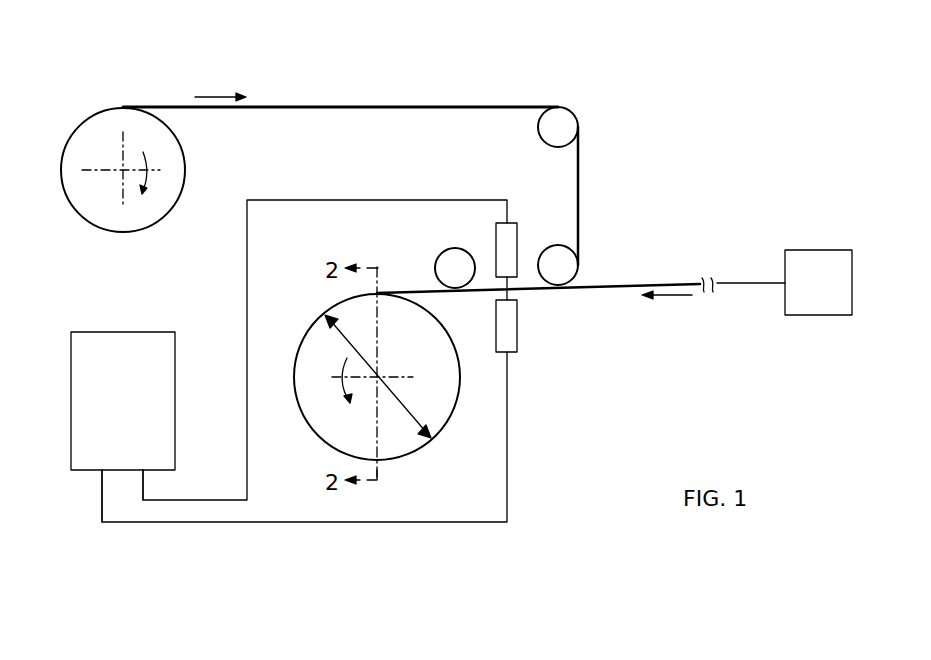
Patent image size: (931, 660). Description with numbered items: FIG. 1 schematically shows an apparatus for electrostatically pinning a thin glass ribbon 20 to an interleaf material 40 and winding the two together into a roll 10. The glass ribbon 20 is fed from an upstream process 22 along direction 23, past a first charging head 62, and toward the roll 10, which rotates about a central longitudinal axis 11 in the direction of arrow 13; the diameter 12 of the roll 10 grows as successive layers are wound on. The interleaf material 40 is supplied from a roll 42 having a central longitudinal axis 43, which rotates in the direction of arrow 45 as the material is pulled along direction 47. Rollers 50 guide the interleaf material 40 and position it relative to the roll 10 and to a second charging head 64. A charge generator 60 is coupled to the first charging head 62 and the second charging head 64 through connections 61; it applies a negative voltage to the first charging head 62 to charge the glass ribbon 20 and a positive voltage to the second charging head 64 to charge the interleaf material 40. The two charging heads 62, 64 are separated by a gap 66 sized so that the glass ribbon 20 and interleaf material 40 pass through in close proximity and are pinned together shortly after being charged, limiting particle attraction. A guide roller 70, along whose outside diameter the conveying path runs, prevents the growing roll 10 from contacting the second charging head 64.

The roll 10 is at (456, 411).
The central longitudinal axis 11 is at (380, 381).
The diameter 12 is at (343, 333).
The arrow 13 is at (345, 387).
The glass ribbon 20 is at (683, 283).
The upstream process 22 is at (803, 299).
The direction 23 is at (668, 294).
The interleaf material 40 is at (347, 107).
The roll 42 is at (85, 113).
The central longitudinal axis 43 is at (120, 172).
The arrow 45 is at (150, 180).
The direction 47 is at (217, 97).
The guide rollers 50 is at (560, 125).
The charge generator 60 is at (93, 421).
The connections 61 is at (185, 501).
The first charging head 62 is at (510, 322).
The second charging head 64 is at (508, 235).
The gap 66 is at (505, 280).
The guide roller 70 is at (453, 267).